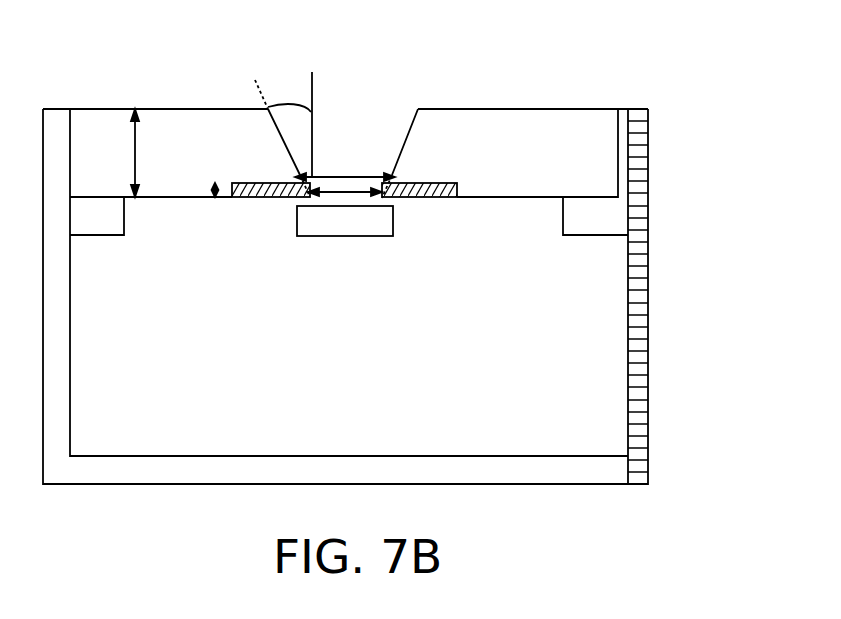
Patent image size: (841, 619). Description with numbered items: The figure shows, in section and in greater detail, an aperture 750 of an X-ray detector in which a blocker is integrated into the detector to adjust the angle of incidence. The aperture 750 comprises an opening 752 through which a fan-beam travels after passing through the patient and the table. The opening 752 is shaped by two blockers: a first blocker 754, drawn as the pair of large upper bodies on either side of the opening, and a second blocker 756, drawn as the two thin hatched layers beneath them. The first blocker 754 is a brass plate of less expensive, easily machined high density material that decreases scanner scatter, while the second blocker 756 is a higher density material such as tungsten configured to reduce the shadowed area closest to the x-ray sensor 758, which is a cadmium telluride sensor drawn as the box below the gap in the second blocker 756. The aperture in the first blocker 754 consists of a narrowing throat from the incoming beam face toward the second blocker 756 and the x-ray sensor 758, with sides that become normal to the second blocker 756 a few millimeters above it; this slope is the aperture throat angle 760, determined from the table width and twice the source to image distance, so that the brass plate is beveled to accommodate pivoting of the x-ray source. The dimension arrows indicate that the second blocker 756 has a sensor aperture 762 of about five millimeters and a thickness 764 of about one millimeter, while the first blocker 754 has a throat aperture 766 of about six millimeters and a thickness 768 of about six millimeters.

The aperture 750 is at (665, 33).
The opening 752 is at (392, 108).
The first blocker 754 is at (185, 109).
The second blocker 756 is at (252, 197).
The x-ray sensor 758 is at (367, 236).
The aperture throat angle 760 is at (291, 105).
The sensor aperture 762 is at (310, 198).
The thickness 764 is at (216, 184).
The throat aperture 766 is at (378, 173).
The thickness 768 is at (136, 164).